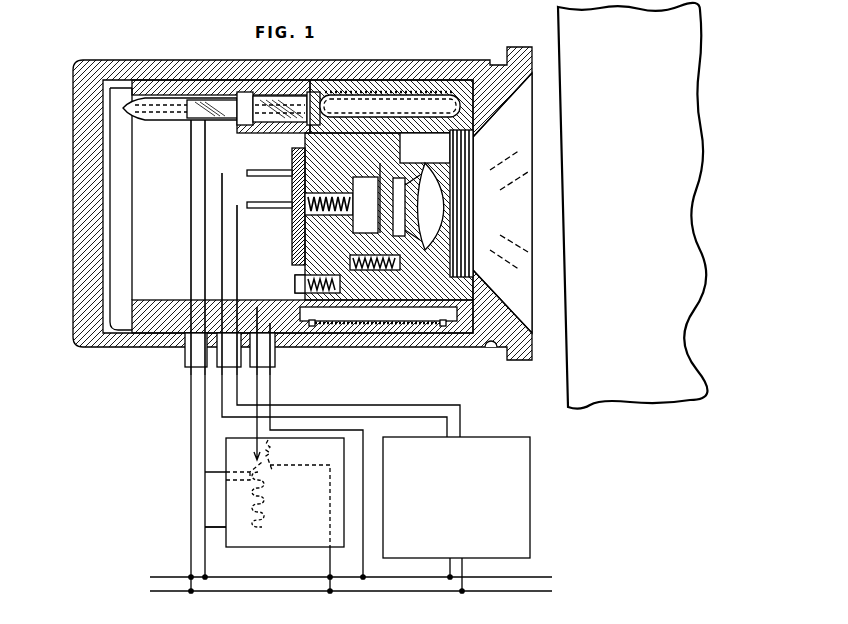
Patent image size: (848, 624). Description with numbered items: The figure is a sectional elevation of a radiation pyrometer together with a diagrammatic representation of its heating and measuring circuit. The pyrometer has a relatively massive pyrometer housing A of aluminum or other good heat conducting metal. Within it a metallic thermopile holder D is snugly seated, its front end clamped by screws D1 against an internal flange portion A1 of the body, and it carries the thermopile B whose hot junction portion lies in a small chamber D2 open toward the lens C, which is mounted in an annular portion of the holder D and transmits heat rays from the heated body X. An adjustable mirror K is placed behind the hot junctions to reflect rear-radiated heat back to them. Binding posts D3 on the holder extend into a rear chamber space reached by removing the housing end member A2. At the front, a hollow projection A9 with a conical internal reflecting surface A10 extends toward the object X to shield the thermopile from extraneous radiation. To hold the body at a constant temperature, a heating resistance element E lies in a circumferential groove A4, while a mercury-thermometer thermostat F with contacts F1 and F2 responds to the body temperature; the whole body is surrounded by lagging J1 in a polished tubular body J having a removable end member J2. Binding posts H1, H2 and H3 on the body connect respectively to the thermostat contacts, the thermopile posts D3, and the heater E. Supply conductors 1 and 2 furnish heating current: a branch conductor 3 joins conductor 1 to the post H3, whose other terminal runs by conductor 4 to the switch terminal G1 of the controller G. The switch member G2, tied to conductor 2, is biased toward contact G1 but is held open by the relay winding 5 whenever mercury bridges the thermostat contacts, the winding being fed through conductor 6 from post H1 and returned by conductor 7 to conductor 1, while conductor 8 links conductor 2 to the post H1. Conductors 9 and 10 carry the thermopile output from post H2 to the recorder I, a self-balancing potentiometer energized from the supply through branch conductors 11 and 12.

The end member J2 is at (72, 183).
The hollow projection A9 is at (505, 46).
The conical internal reflecting surface A10 is at (510, 140).
The housing end member A2 is at (110, 201).
The thermostat contact F2 is at (213, 104).
The thermostat contact F1 is at (213, 126).
The lagging J1 is at (362, 80).
The tubular body J is at (333, 62).
The thermostat F is at (409, 96).
The adjustable mirror K is at (365, 180).
The thermopile holder D is at (292, 240).
The binding posts D3 is at (252, 180).
The chamber D2 is at (384, 198).
The thermopile B is at (406, 207).
The lens C is at (440, 208).
The internal flange portion A1 is at (455, 257).
The screws D1 is at (297, 280).
The pyrometer housing A is at (167, 300).
The groove A4 is at (318, 330).
The heating resistance element E is at (392, 328).
The binding post H1 is at (185, 368).
The binding post H2 is at (210, 372).
The binding post H3 is at (275, 368).
The conductor 8 is at (191, 488).
The conductor 6 is at (206, 433).
The conductor 7 is at (205, 563).
The conductor 10 is at (395, 417).
The conductor 9 is at (402, 386).
The conductor 4 is at (257, 392).
The branch conductor 3 is at (363, 440).
The supply conductor 1 is at (168, 577).
The supply conductor 2 is at (170, 591).
The controller G is at (303, 540).
The switch terminal G1 is at (250, 465).
The switch member G2 is at (275, 470).
The relay winding 5 is at (254, 496).
The recorder I is at (531, 478).
The branch conductor 11 is at (450, 568).
The branch conductor 12 is at (463, 568).
The heated body X is at (566, 30).